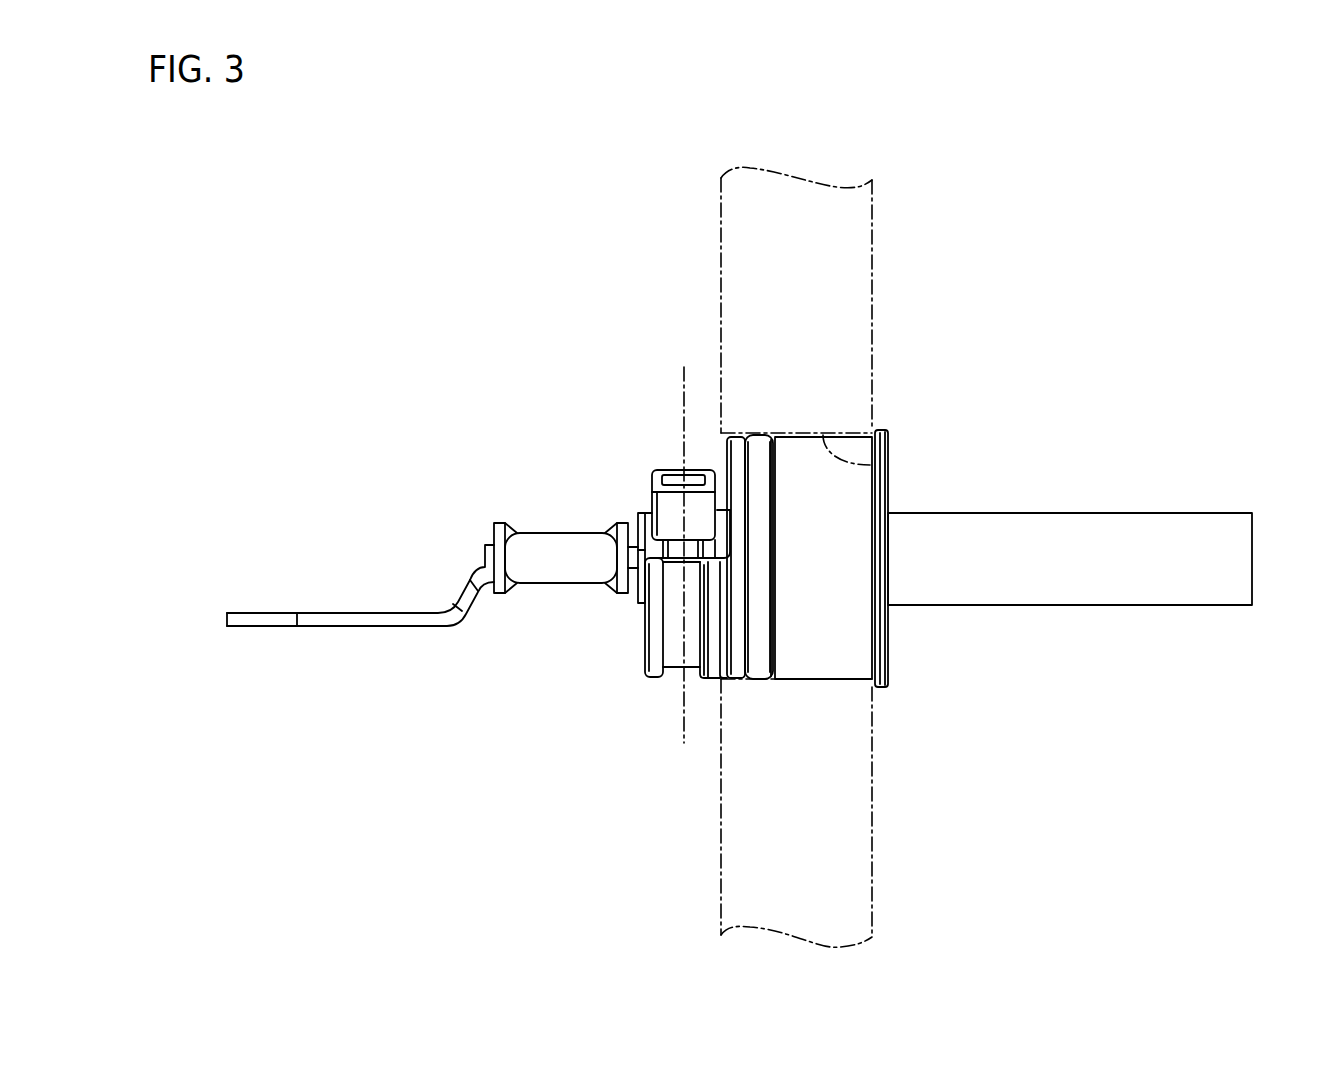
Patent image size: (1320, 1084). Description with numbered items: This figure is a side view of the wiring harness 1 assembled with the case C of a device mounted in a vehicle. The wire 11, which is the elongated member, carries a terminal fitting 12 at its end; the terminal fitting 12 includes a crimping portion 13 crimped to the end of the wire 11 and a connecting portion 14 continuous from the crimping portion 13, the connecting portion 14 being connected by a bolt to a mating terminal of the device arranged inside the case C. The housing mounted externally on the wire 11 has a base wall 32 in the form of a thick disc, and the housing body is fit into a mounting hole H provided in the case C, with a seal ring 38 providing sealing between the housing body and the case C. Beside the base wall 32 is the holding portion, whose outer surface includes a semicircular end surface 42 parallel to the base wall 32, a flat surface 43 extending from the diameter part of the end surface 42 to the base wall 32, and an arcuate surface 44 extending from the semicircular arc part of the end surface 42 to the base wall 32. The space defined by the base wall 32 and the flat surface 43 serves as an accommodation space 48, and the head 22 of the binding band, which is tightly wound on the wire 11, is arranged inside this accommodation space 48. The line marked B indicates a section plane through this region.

The wiring harness 1 is at (1097, 422).
The wire 11 is at (1155, 602).
The terminal fitting 12 is at (524, 724).
The crimping portion 13 is at (545, 567).
The connecting portion 14 is at (377, 618).
The head 22 is at (673, 508).
The base wall 32 is at (822, 655).
The seal ring 38 is at (757, 667).
The end surface 42 is at (633, 657).
The flat surface 43 is at (657, 547).
The arcuate surface 44 is at (716, 693).
The accommodation space 48 is at (716, 450).
The section line B is at (673, 391).
The case C is at (872, 263).
The mounting hole H is at (870, 465).